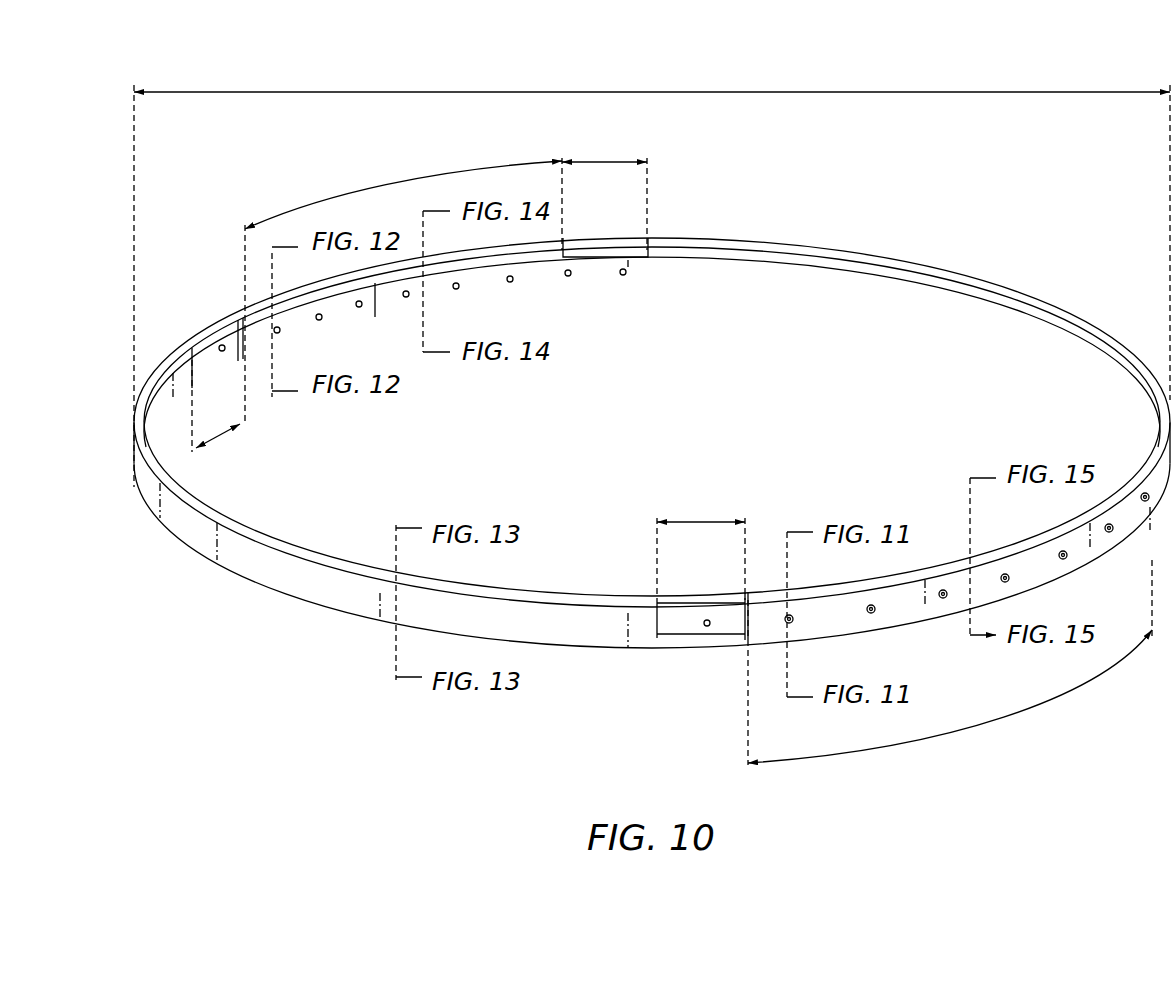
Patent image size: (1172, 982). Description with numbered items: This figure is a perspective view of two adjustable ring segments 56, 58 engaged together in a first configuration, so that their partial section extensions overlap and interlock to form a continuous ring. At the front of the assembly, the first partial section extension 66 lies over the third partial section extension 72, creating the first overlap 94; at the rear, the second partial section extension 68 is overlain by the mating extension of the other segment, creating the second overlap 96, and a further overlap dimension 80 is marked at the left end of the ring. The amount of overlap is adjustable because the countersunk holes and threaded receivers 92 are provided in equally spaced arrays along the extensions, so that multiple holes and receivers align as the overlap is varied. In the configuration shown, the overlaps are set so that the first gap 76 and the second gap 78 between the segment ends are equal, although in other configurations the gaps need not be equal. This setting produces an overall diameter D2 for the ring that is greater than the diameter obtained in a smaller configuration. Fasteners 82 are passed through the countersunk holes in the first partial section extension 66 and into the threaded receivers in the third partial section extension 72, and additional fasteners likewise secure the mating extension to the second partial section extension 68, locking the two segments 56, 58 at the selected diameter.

The adjustable ring segment 56 is at (1037, 302).
The adjustable ring segment 58 is at (268, 592).
The second partial section extension 68 is at (472, 297).
The countersunk holes and threaded receivers 92 is at (568, 277).
The first partial section extension 66 is at (965, 566).
The third partial section extension 72 is at (891, 625).
The fastener 82 is at (787, 618).
The second gap 78 is at (605, 162).
The first gap 76 is at (700, 522).
The end overlap length 80 is at (225, 443).
The second overlap 96 is at (385, 186).
The first overlap 94 is at (1015, 712).
The overall diameter D2 is at (652, 92).